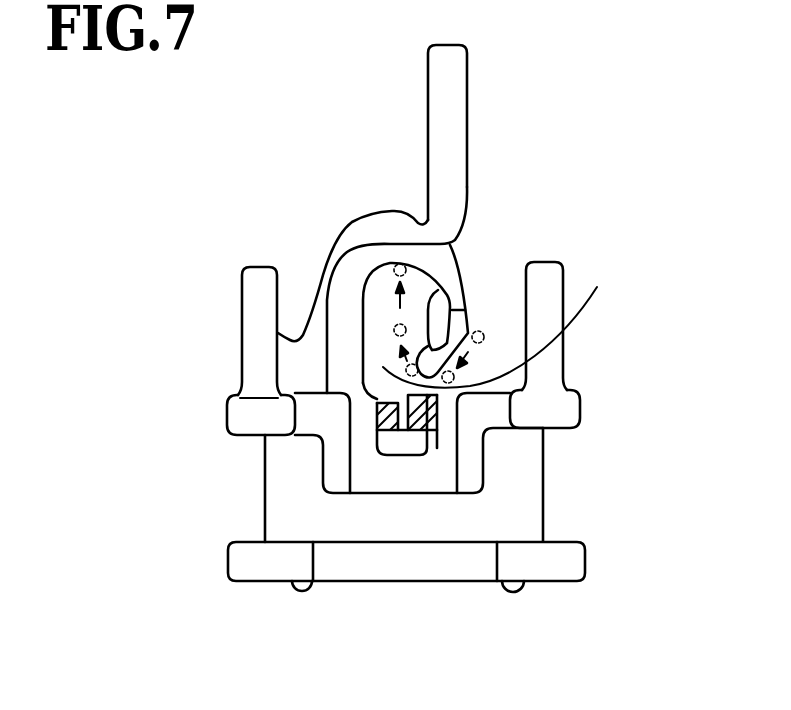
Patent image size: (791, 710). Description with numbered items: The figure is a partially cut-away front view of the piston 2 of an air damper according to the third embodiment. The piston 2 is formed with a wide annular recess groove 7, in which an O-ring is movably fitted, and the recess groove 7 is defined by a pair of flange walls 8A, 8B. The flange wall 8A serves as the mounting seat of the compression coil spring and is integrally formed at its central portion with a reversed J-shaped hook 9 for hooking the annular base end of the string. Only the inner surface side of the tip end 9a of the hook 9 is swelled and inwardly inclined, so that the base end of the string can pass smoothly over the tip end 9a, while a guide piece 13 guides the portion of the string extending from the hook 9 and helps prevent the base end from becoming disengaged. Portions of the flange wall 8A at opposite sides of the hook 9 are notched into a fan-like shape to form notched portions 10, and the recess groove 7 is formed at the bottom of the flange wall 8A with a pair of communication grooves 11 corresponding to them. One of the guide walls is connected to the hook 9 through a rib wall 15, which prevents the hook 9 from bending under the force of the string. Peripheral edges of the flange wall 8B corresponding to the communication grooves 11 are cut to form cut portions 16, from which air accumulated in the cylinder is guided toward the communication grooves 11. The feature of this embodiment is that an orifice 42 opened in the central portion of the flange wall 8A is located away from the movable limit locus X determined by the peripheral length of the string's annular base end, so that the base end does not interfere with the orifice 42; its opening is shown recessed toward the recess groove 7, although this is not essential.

The piston 2 is at (400, 142).
The recess groove 7 is at (230, 470).
The flange wall 8A is at (542, 397).
The flange wall 8B is at (550, 565).
The hook 9 is at (372, 233).
The tip end 9a is at (438, 290).
The notched portion 10 is at (327, 415).
The communication groove 11 is at (363, 437).
The guide piece 13 is at (460, 115).
The rib wall 15 is at (300, 335).
The cut portion 16 is at (455, 568).
The orifice 42 is at (405, 398).
The movable limit locus X is at (595, 305).